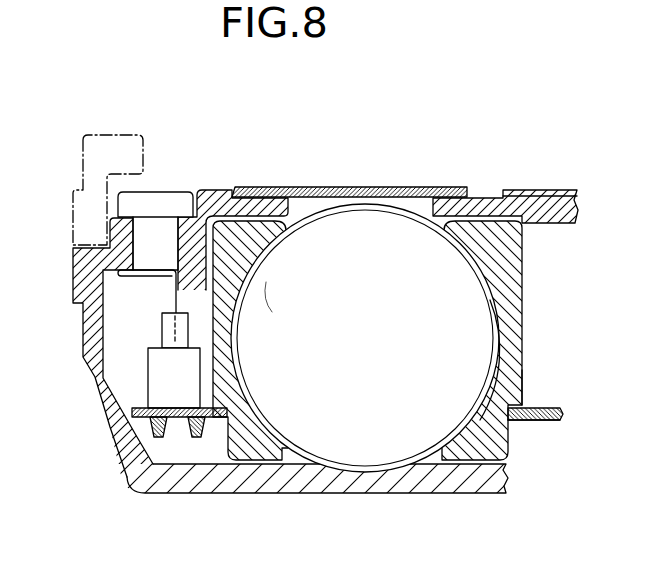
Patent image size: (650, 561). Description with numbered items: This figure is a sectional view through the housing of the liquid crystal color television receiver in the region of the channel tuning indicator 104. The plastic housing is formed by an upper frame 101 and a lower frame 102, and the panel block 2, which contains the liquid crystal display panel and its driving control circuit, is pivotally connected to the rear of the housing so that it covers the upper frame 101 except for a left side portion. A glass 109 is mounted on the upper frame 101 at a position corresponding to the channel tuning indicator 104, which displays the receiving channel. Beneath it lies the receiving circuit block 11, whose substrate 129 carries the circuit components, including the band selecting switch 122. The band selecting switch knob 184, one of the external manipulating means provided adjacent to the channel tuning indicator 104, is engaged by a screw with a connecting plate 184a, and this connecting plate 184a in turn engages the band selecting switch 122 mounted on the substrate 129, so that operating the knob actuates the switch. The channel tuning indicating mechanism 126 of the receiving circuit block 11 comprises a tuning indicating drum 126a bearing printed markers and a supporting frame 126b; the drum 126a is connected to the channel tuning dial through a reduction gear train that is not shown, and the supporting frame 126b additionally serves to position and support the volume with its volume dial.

The panel block 2 is at (78, 172).
The receiving circuit block 11 is at (529, 423).
The upper frame 101 is at (75, 283).
The lower frame 102 is at (265, 488).
The channel tuning indicator 104 is at (304, 203).
The glass 109 is at (391, 187).
The band selecting switch 122 is at (160, 378).
The channel tuning indicating mechanism 126 is at (528, 313).
The tuning indicating drum 126a is at (480, 362).
The supporting frame 126b is at (515, 392).
The substrate 129 is at (557, 421).
The band selecting switch knob 184 is at (163, 200).
The connecting plate 184a is at (172, 302).